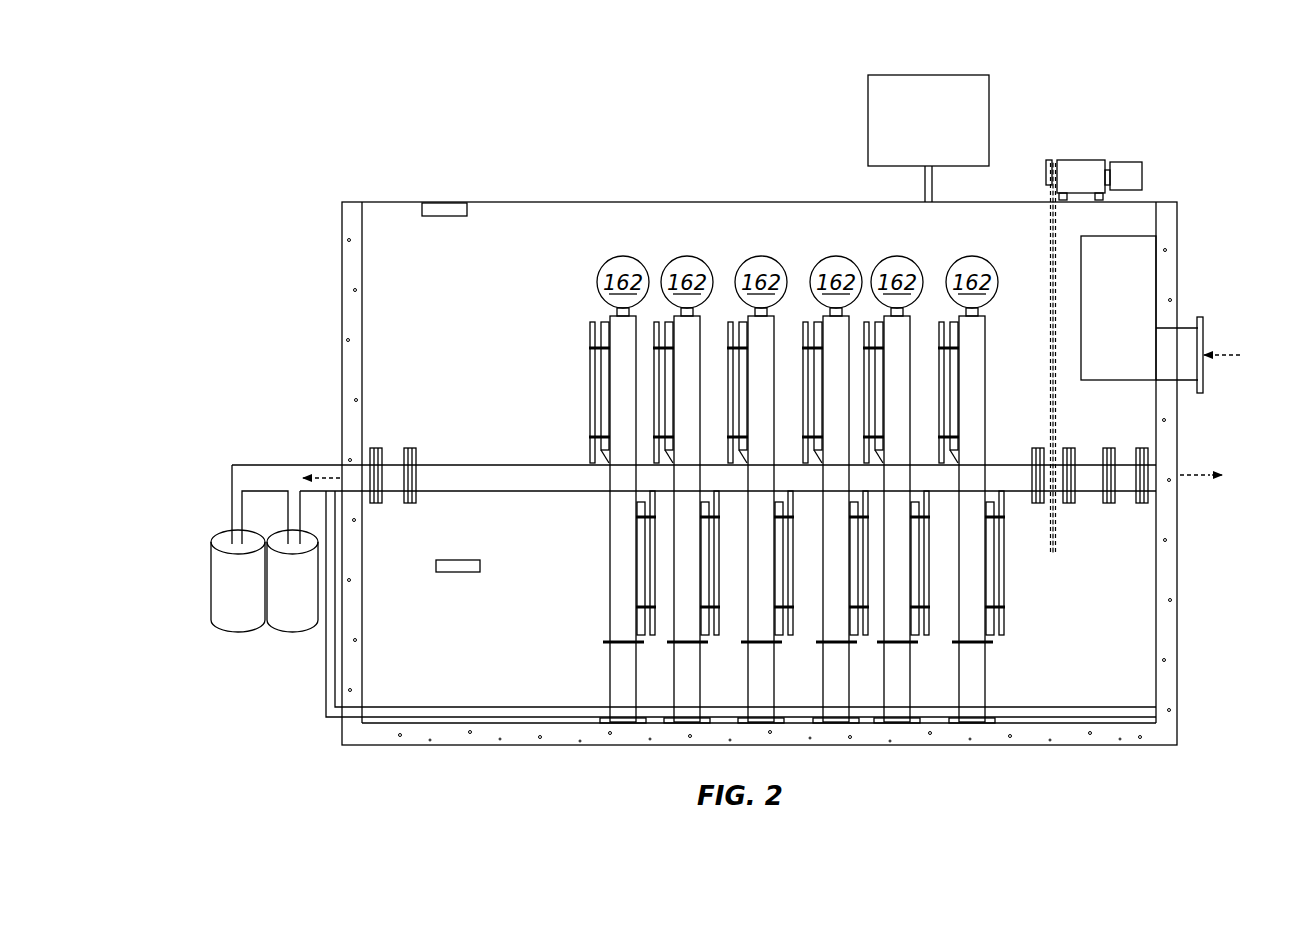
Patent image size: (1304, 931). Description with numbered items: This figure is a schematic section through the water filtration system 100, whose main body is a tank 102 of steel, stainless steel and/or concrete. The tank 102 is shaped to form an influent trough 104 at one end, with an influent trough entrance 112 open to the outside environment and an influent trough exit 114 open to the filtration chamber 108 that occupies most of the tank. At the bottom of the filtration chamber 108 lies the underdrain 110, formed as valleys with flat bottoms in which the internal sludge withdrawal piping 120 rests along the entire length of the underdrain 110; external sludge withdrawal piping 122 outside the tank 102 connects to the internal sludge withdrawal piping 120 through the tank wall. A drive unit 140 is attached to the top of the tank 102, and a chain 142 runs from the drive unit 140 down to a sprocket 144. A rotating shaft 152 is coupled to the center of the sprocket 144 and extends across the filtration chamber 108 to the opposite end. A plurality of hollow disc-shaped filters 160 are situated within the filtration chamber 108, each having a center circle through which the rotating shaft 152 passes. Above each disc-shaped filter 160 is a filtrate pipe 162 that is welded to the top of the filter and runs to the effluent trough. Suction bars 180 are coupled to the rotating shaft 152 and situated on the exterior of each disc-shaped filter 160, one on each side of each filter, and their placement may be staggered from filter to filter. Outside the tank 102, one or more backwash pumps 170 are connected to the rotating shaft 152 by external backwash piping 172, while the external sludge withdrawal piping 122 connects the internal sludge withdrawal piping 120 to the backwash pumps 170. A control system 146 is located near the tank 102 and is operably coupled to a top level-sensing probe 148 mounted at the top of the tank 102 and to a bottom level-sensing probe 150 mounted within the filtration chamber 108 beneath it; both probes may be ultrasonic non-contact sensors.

The water filtration system 100 is at (305, 80).
The tank 102 is at (353, 202).
The influent trough 104 is at (1100, 320).
The filtration chamber 108 is at (557, 228).
The underdrain 110 is at (507, 722).
The influent trough entrance 112 is at (1205, 335).
The influent trough exit 114 is at (1082, 236).
The internal sludge withdrawal piping 120 is at (402, 707).
The external sludge withdrawal piping 122 is at (326, 670).
The drive unit 140 is at (1125, 160).
The chain 142 is at (1051, 240).
The sprocket 144 is at (1060, 506).
The control system 146 is at (908, 132).
The top level-sensing probe 148 is at (440, 216).
The bottom level-sensing probe 150 is at (458, 560).
The rotating shaft 152 is at (455, 468).
The disc-shaped filter 160 is at (689, 428).
The filtrate pipe 162 is at (797, 282).
The backwash pump 170 is at (218, 600).
The external backwash piping 172 is at (288, 520).
The suction bar 180 is at (672, 383).